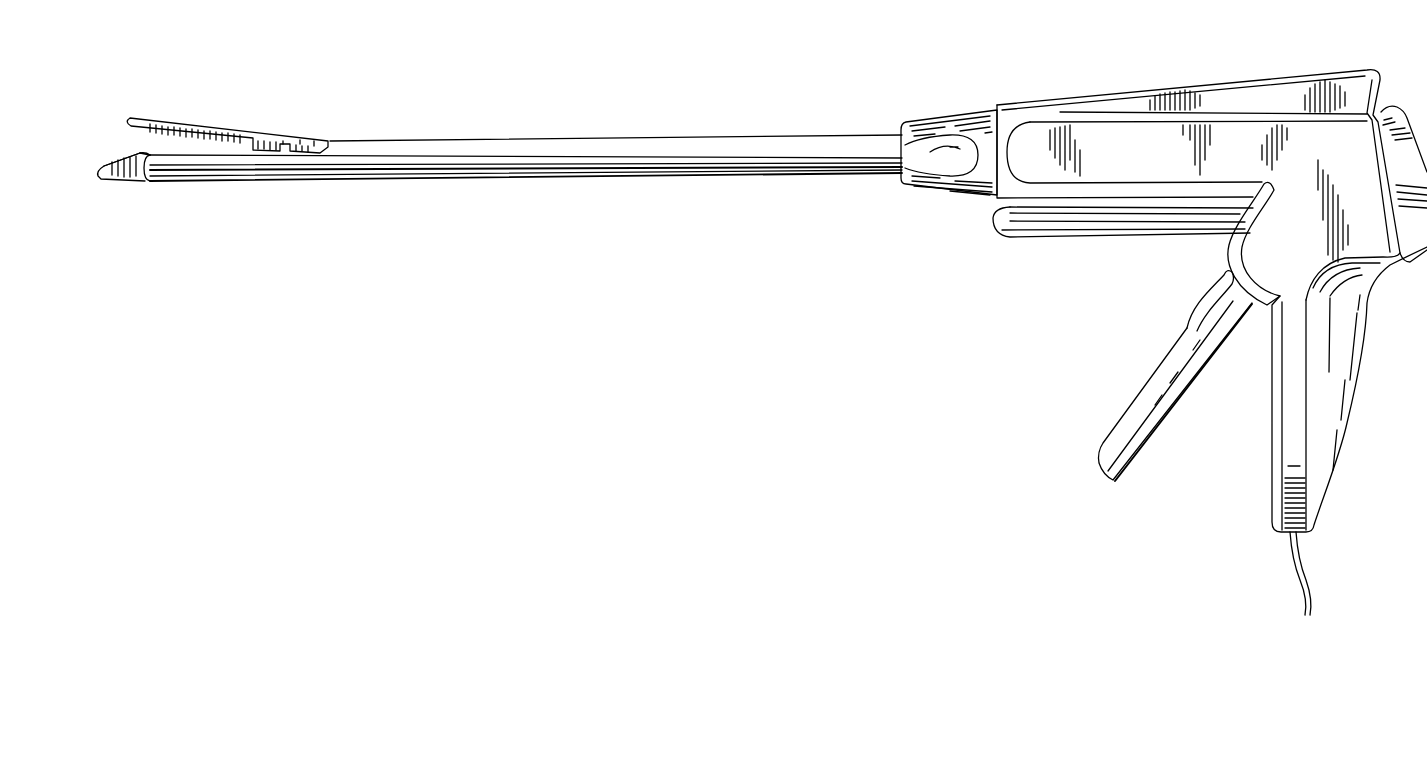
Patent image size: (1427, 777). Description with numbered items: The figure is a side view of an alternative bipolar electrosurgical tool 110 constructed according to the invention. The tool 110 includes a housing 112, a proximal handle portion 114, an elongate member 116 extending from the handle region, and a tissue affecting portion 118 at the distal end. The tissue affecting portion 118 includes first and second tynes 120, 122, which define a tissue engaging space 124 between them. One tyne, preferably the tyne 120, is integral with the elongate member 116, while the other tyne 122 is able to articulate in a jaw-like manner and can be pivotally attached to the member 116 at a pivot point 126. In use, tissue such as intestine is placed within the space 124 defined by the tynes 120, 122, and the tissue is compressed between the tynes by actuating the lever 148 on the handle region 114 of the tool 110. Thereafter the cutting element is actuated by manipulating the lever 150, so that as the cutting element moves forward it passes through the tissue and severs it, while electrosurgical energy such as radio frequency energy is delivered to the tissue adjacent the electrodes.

The bipolar electrosurgical tool 110 is at (508, 393).
The housing 112 is at (902, 116).
The proximal handle portion 114 is at (1068, 140).
The elongate member 116 is at (711, 167).
The tissue affecting portion 118 is at (187, 96).
The first tyne 120 is at (193, 172).
The second tyne 122 is at (212, 130).
The tissue engaging space 124 is at (140, 141).
The pivot point 126 is at (335, 143).
The lever 148 is at (1130, 390).
The lever 150 is at (1127, 227).